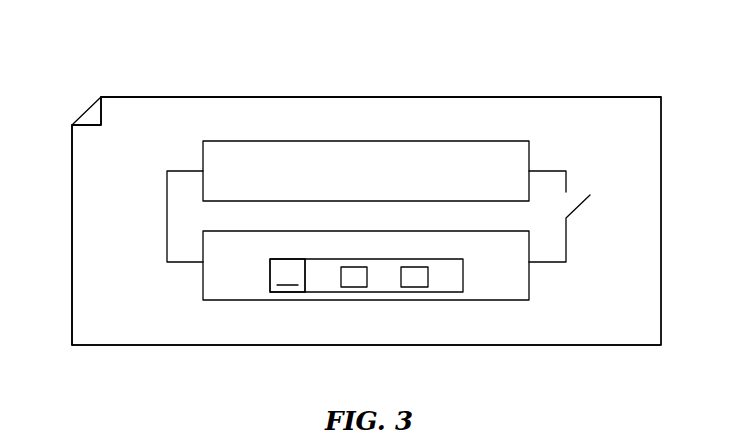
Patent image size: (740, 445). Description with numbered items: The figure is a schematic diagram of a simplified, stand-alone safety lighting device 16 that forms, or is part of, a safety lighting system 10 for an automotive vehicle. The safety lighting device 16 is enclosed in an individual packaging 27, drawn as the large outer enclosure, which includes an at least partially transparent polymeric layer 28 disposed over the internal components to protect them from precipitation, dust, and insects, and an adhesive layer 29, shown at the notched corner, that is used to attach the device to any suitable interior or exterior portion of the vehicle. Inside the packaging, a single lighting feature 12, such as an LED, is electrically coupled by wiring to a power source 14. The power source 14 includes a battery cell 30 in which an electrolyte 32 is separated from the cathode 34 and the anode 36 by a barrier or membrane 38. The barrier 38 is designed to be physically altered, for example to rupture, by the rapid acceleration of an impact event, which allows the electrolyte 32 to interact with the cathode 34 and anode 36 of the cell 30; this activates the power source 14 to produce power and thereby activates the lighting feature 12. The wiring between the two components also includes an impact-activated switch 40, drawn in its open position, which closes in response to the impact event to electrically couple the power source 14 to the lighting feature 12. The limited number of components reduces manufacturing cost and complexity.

The safety lighting device 16 is at (376, 44).
The safety lighting system 10 is at (366, 221).
The individual packaging 27 is at (126, 94).
The adhesive layer 29 is at (88, 110).
The at least partially transparent polymeric layer 28 is at (89, 236).
The lighting feature 12 is at (368, 141).
The power source 14 is at (368, 231).
The impact-activated switch 40 is at (597, 203).
The battery cell 30 is at (262, 274).
The electrolyte 32 is at (287, 275).
The barrier or membrane 38 is at (306, 277).
The cathode 34 is at (354, 288).
The anode 36 is at (413, 288).